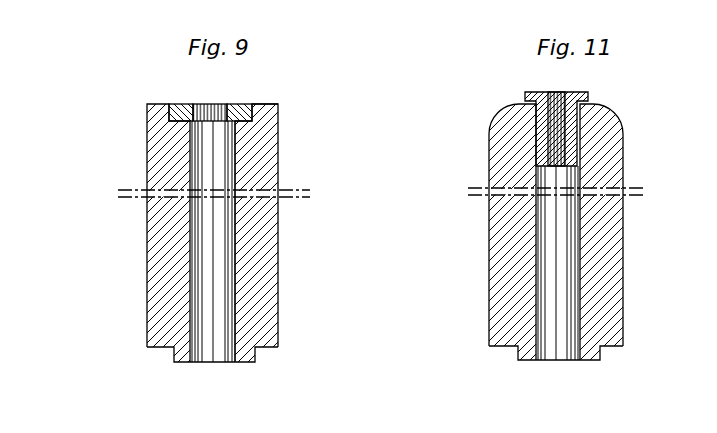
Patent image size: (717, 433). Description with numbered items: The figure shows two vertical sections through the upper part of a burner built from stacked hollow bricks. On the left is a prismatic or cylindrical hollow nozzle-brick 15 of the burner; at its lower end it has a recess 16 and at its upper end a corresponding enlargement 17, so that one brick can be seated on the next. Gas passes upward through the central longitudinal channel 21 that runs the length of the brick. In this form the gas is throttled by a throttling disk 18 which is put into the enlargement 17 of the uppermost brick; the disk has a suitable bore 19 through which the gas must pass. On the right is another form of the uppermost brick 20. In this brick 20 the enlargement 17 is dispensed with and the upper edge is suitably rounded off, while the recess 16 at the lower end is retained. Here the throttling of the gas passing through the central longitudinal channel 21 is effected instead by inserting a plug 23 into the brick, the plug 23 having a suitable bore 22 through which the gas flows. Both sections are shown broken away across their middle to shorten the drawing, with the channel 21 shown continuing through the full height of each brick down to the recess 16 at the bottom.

In FIG. 9, the nozzle-brick 15 is at (170, 242).
In FIG. 9, the recess 16 is at (257, 352).
In FIG. 11, the recess 16 is at (523, 355).
In FIG. 9, the enlargement 17 is at (277, 102).
In FIG. 9, the throttling disk 18 is at (177, 107).
In FIG. 9, the bore 19 is at (222, 105).
In FIG. 11, the brick 20 is at (520, 223).
In FIG. 9, the central longitudinal channel 21 is at (215, 220).
In FIG. 11, the central longitudinal channel 21 is at (557, 268).
In FIG. 11, the bore 22 is at (558, 145).
In FIG. 11, the plug 23 is at (588, 93).